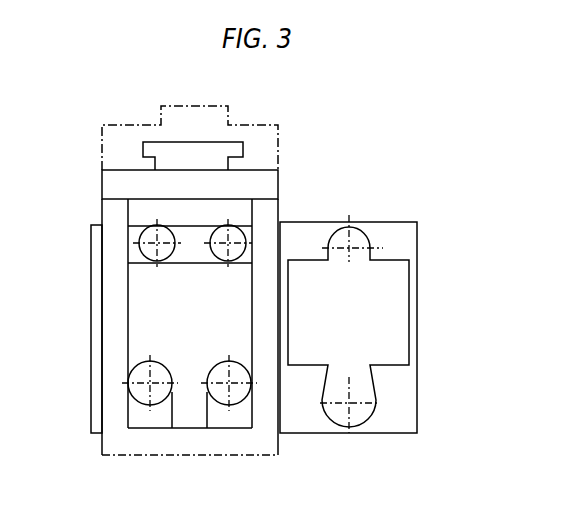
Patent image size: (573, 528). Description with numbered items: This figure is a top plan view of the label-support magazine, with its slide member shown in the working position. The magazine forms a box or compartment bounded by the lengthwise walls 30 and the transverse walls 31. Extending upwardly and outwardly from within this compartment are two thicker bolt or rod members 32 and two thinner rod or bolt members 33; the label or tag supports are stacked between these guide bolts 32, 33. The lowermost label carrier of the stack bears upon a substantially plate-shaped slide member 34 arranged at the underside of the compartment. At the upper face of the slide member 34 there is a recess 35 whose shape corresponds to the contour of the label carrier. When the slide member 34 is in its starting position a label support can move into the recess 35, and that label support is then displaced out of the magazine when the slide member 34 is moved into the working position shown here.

The lengthwise walls 30 is at (112, 321).
The transverse walls 31 is at (115, 185).
The thicker bolt or rod members 32 is at (219, 371).
The thinner rod or bolt members 33 is at (162, 257).
The slide member 34 is at (407, 389).
The recess 35 is at (362, 317).